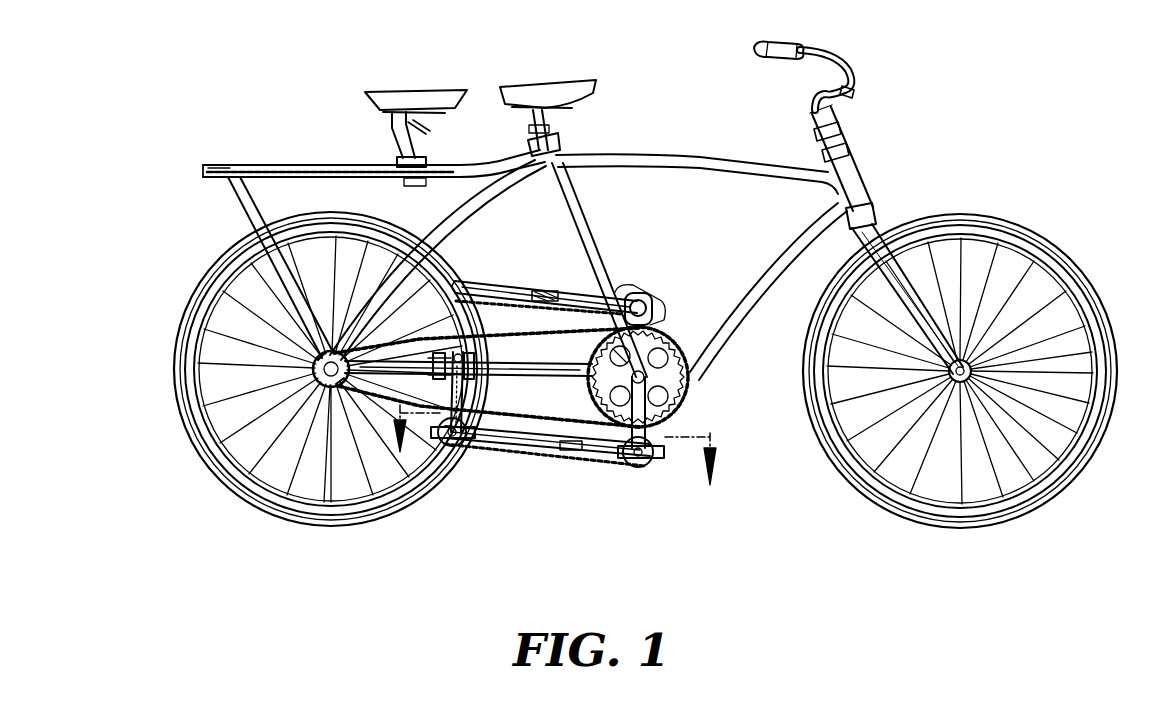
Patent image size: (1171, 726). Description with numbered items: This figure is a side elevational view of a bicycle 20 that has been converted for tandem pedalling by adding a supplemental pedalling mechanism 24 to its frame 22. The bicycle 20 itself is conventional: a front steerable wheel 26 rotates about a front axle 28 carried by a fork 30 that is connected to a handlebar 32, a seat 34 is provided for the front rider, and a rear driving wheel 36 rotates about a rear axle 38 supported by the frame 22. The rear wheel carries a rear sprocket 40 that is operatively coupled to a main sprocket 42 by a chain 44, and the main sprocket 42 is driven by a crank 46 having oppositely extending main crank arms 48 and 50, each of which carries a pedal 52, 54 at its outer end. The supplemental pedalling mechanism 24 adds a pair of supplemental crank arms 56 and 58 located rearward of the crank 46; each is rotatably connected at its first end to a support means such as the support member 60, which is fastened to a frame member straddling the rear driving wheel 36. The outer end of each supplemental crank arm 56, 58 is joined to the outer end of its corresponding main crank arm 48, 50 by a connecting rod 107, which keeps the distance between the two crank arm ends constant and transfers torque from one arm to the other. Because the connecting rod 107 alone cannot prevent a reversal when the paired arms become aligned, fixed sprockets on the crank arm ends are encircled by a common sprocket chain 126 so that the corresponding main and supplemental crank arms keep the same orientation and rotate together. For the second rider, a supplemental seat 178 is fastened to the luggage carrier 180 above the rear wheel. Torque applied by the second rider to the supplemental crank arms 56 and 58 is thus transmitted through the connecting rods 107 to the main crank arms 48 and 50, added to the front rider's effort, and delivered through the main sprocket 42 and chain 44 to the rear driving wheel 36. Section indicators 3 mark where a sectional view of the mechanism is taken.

The bicycle 20 is at (822, 559).
The frame 22 is at (600, 226).
The supplemental pedalling mechanism 24 is at (568, 474).
The front steerable wheel 26 is at (1076, 258).
The front axle 28 is at (936, 392).
The fork 30 is at (918, 250).
The handlebar 32 is at (848, 58).
The seat 34 is at (566, 86).
The rear driving wheel 36 is at (178, 333).
The rear axle 38 is at (312, 402).
The rear sprocket 40 is at (300, 362).
The main sprocket 42 is at (680, 346).
The chain 44 is at (443, 398).
The crank 46 is at (690, 378).
The main crank arm 48 is at (680, 405).
The main crank arm 50 is at (650, 317).
The pedal 52 is at (662, 456).
The pedal 54 is at (651, 300).
The supplemental crank arm 56 is at (470, 393).
The supplemental crank arm 58 is at (452, 328).
The support member 60 is at (468, 361).
The connecting rod 107 is at (512, 288).
The sprocket chain 126 is at (605, 464).
The supplemental seat 178 is at (392, 90).
The luggage carrier 180 is at (302, 165).
The section line 3 is at (554, 445).